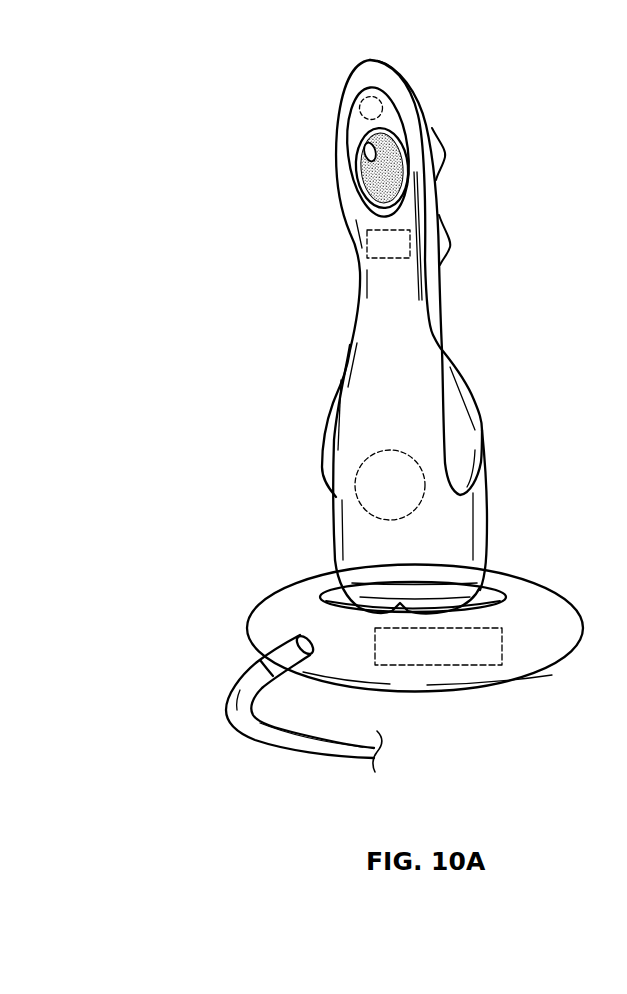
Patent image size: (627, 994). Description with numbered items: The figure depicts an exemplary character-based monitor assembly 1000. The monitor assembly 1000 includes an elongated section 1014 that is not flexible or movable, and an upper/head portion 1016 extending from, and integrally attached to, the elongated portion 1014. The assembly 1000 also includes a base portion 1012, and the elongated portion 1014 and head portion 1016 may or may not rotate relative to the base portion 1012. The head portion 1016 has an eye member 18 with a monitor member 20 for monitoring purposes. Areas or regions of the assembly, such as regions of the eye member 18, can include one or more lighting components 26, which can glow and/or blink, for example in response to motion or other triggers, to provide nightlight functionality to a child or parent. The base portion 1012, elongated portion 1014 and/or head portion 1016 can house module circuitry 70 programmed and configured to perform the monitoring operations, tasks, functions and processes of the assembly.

The monitor assembly 1000 is at (391, 46).
The upper/head portion 1016 is at (345, 108).
The lighting component 26 is at (380, 104).
The monitor member 20 is at (364, 152).
The eye member 18 is at (361, 201).
The elongated section/portion 1014 is at (412, 368).
The base portion 1012 is at (546, 602).
The module circuitry 70 is at (490, 655).